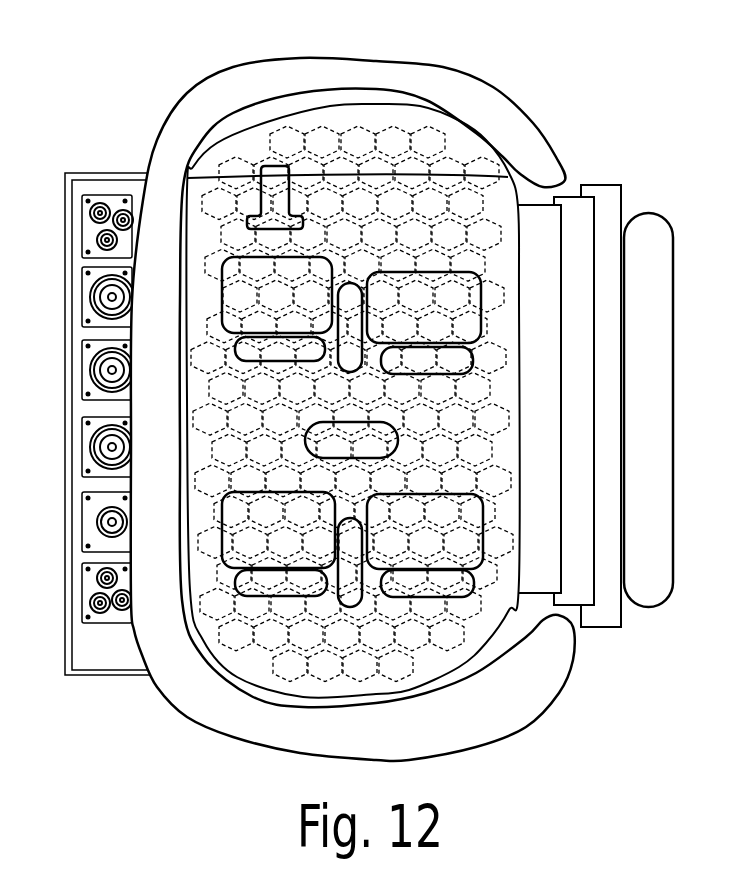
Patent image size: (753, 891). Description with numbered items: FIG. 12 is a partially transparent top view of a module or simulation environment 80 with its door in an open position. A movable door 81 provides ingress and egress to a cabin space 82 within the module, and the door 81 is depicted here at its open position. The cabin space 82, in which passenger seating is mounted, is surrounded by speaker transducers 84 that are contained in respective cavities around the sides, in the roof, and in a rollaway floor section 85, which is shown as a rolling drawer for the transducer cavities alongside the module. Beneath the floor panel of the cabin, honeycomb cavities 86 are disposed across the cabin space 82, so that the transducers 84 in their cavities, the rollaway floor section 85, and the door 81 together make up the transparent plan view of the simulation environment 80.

The module or simulation environment 80 is at (180, 67).
The movable door 81 is at (674, 311).
The cabin space 82 is at (399, 203).
The speaker transducers 84 is at (82, 433).
The rollaway floor section 85 is at (322, 422).
The honeycomb cavities 86 is at (486, 263).